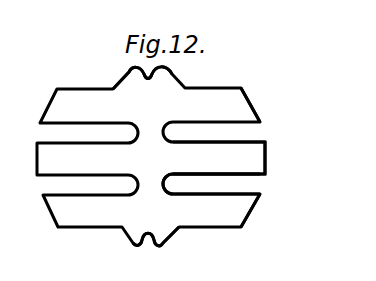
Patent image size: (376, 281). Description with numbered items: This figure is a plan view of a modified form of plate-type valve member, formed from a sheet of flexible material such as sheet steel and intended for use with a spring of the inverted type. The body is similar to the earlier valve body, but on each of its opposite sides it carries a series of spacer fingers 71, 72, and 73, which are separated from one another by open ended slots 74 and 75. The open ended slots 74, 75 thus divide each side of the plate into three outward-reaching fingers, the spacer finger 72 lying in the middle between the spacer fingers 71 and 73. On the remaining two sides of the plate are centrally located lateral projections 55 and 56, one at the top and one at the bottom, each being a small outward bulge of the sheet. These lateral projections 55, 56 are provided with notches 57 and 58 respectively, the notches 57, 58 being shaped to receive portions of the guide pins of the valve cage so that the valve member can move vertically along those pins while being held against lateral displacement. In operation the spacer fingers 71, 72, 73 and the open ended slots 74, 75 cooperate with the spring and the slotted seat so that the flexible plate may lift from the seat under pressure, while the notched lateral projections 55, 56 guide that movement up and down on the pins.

The spacer finger 71 is at (210, 95).
The spacer finger 72 is at (255, 157).
The spacer finger 73 is at (240, 214).
The open ended slot 74 is at (255, 128).
The open ended slot 75 is at (250, 182).
The lateral projection 55 is at (128, 75).
The lateral projection 56 is at (177, 236).
The notch 57 is at (143, 66).
The notch 58 is at (145, 245).